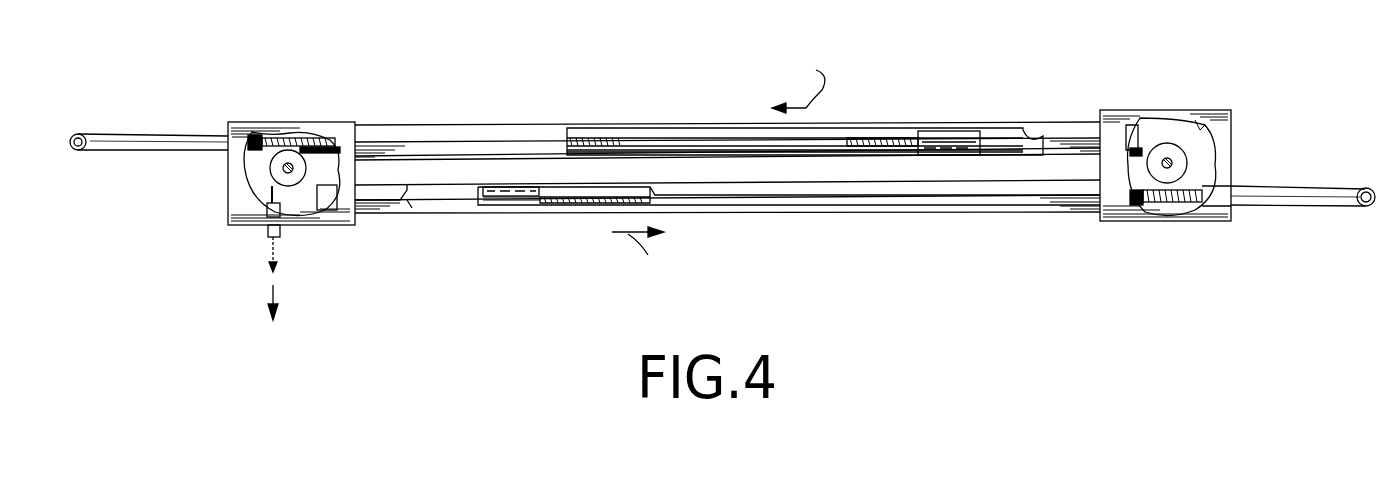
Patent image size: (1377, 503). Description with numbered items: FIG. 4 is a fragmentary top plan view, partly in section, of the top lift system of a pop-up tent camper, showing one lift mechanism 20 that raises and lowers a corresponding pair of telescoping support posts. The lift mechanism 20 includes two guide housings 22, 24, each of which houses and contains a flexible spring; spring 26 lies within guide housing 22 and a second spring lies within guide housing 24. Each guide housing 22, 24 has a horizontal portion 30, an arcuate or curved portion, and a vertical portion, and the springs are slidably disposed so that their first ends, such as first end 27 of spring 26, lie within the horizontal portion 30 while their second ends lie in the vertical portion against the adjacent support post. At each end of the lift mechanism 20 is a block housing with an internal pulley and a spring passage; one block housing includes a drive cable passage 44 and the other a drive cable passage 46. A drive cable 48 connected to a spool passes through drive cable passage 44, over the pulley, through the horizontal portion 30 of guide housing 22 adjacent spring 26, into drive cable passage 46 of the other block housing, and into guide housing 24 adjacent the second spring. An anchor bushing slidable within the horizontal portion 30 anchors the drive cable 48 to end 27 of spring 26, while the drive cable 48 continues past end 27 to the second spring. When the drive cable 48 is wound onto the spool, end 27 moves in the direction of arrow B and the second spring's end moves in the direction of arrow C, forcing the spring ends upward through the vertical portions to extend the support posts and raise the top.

The lift mechanism 20 is at (744, 78).
The guide housing 22 is at (423, 124).
The guide housing 24 is at (388, 215).
The flexible spring 26 is at (300, 136).
The first end 27 is at (915, 112).
The horizontal portion 30 is at (538, 127).
The drive cable passage 44 is at (268, 240).
The drive cable passage 46 is at (1148, 148).
The drive cable 48 is at (277, 255).